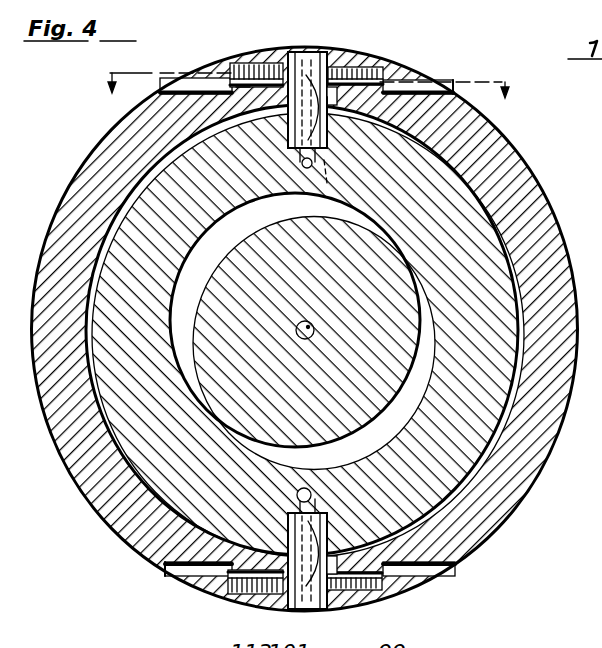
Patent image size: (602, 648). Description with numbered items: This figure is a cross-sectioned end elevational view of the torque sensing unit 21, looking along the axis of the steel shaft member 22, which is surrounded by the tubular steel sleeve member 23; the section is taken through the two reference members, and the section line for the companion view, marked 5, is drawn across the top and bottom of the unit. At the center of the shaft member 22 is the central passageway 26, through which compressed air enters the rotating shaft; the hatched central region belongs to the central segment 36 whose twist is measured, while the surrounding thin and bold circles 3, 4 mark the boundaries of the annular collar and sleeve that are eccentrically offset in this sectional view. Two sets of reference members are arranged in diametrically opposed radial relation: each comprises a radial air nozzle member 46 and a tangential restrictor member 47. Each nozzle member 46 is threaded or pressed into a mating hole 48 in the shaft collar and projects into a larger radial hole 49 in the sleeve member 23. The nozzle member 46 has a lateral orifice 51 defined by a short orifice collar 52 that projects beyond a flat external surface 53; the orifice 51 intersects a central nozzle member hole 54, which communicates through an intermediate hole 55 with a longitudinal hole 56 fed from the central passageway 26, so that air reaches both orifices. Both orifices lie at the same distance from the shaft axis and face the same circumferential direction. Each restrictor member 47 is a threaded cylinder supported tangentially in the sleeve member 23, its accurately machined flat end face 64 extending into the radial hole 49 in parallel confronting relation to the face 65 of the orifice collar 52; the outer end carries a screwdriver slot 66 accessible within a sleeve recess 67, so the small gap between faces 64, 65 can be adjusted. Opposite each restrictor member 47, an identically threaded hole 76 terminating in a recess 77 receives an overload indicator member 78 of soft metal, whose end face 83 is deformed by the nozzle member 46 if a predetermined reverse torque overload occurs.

The torque sensing unit 21 is at (575, 141).
The shaft member 22 is at (399, 378).
The sleeve member 23 is at (505, 497).
The central passageway 26 is at (315, 328).
The central segment 36 is at (192, 318).
The ring 3 is at (430, 338).
The ring 4 is at (515, 370).
The radial air nozzle member 46 is at (291, 55).
The tangential restrictor member 47 is at (383, 70).
The mating holes 48 is at (290, 148).
The radial holes 49 is at (327, 100).
The lateral orifice 51 is at (311, 58).
The orifice collar 52 is at (330, 62).
The flat external surface 53 is at (318, 78).
The central nozzle member hole 54 is at (325, 172).
The intermediate hole 55 is at (303, 160).
The longitudinal hole 56 is at (311, 168).
The flat end faces 64 is at (329, 108).
The faces 65 is at (360, 67).
The screwdriver slots 66 is at (388, 83).
The sleeve recesses 67 is at (445, 90).
The threaded hole 76 is at (242, 90).
The recess 77 is at (185, 78).
The overload indicator member 78 is at (243, 63).
The end faces 83 is at (277, 63).
The section line 5- 5 is at (308, 71).